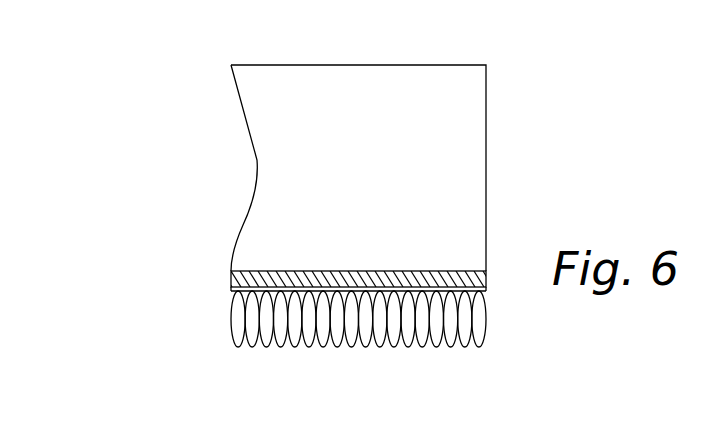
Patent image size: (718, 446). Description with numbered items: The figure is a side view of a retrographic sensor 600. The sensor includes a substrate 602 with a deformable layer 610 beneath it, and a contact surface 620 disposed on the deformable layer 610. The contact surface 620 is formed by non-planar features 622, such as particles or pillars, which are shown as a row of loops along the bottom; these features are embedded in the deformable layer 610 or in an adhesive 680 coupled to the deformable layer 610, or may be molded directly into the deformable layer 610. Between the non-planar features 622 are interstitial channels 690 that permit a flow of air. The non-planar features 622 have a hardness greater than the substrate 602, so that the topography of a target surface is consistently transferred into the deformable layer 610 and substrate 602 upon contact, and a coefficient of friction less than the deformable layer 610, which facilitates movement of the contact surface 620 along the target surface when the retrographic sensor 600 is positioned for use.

The retrographic sensor 600 is at (487, 141).
The substrate 602 is at (390, 190).
The deformable layer 610 is at (231, 280).
The adhesive 680 is at (231, 292).
The contact surface 620 is at (370, 354).
The non-planar features 622 is at (255, 346).
The interstitial channels 690 is at (319, 353).